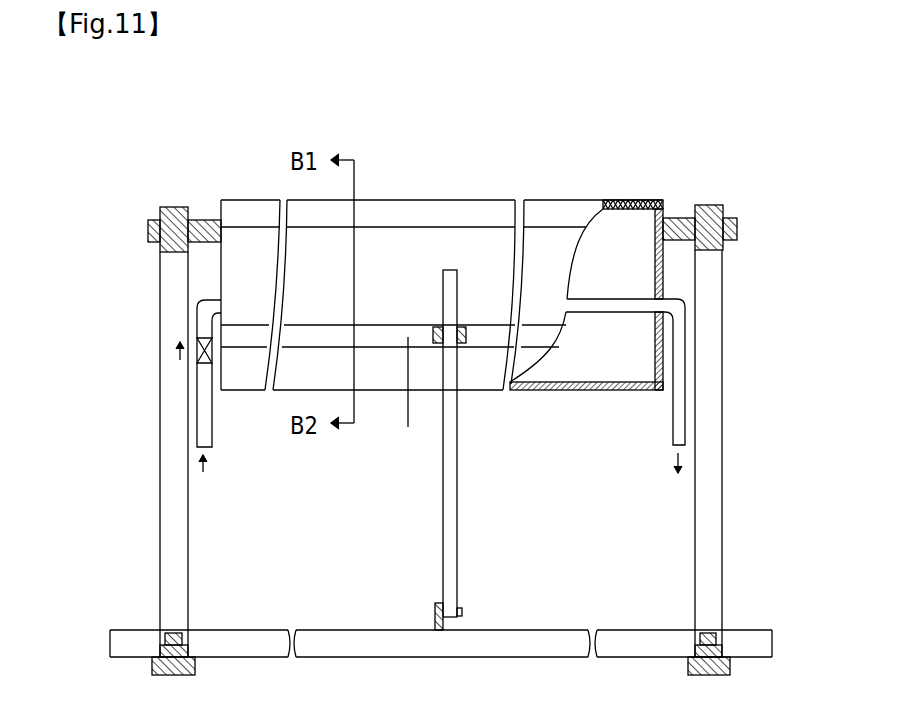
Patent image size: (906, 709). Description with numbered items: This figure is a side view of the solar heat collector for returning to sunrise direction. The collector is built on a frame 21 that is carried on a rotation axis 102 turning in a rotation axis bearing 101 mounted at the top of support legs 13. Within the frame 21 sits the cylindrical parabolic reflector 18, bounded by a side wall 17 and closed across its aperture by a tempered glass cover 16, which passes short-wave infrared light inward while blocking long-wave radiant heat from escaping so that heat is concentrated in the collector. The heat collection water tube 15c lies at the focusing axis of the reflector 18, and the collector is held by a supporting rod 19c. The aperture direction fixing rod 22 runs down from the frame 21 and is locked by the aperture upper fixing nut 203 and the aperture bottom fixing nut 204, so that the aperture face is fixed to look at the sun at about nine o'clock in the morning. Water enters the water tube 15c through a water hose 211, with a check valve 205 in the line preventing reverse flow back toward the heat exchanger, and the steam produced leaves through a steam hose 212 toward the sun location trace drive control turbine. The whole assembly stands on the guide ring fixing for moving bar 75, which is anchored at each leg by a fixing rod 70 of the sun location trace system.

The solar heat or photovoltaic collector support legs 13 is at (175, 559).
The heat collection water tube of the solar heat collector for returning to sunrise 15c is at (605, 302).
The tempered glass cover of cylindrical parabolic reflector 16 is at (647, 200).
The side wall of cylindrical parabolic reflector 17 is at (655, 256).
The cylindrical parabolic reflector 18 is at (553, 392).
The supporting rod of the solar heat collector for returning to sunrise direction 19c is at (417, 397).
The frame for the solar heat collector for returning to sunrise direction 21 is at (446, 214).
The aperture direction fixing rod 22 is at (450, 493).
The fixing rod of the sun location trace system 70 is at (195, 667).
The guide ring fixing for moving bar 75 is at (565, 642).
The rotation axis bearing for solar-heat or photovoltaic collector 101 is at (175, 207).
The rotation axis of solar heat or photovoltaic collector 102 is at (148, 229).
The aperture upper fixing nut 203 is at (440, 326).
The aperture bottom fixing nut 204 is at (433, 613).
The check valve 205 is at (197, 351).
The water hose 211 is at (209, 433).
The steam hose 212 is at (677, 425).